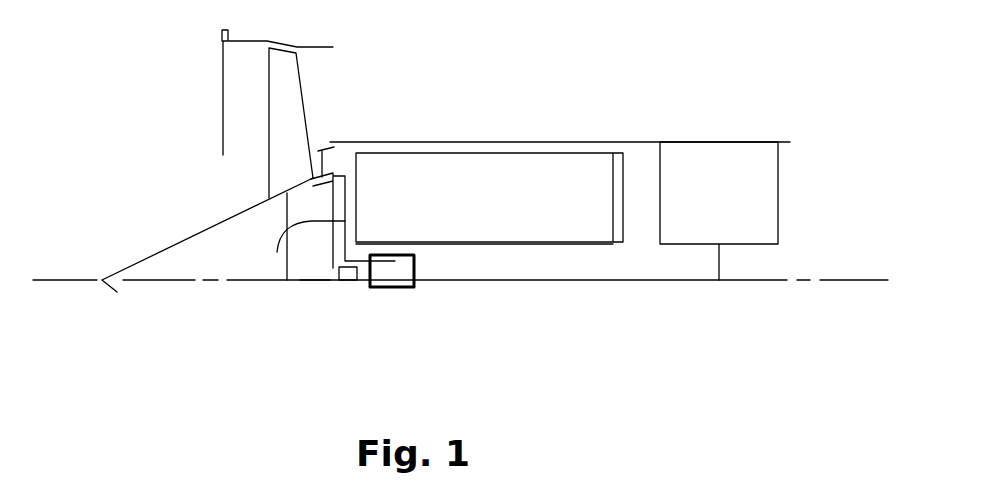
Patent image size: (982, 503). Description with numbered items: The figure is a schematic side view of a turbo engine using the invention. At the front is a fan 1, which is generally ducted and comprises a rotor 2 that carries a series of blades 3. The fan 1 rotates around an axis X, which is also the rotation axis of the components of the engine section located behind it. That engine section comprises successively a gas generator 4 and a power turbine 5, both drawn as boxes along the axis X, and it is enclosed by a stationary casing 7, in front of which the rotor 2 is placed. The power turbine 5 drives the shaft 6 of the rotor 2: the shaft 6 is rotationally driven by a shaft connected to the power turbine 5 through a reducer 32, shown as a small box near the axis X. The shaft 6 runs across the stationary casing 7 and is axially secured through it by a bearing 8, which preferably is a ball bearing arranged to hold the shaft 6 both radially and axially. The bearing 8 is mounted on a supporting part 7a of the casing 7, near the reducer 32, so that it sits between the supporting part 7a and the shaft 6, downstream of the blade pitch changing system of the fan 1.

The fan 1 is at (192, 150).
The rotor 2 is at (186, 268).
The blades 3 is at (263, 87).
The gas generator 4 is at (468, 188).
The power turbine 5 is at (694, 180).
The shaft 6 is at (308, 282).
The stationary casing 7 is at (343, 170).
The supporting part 7a is at (277, 252).
The bearing 8 is at (349, 282).
The reducer 32 is at (405, 290).
The axis X is at (63, 282).